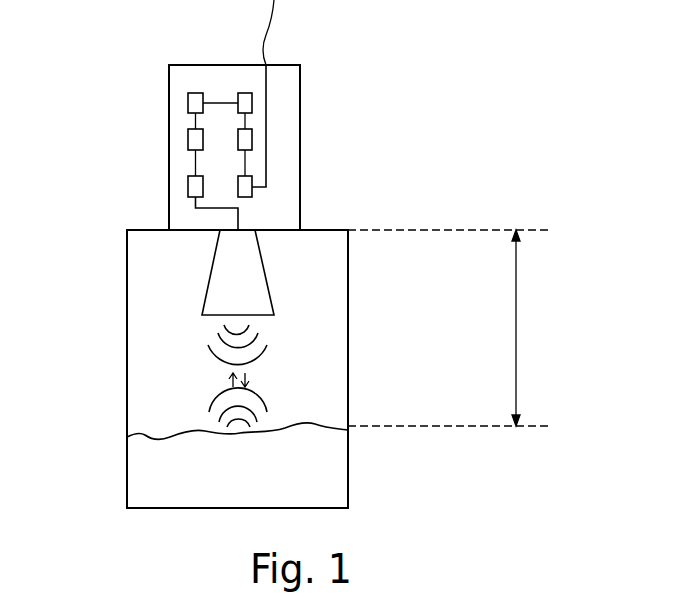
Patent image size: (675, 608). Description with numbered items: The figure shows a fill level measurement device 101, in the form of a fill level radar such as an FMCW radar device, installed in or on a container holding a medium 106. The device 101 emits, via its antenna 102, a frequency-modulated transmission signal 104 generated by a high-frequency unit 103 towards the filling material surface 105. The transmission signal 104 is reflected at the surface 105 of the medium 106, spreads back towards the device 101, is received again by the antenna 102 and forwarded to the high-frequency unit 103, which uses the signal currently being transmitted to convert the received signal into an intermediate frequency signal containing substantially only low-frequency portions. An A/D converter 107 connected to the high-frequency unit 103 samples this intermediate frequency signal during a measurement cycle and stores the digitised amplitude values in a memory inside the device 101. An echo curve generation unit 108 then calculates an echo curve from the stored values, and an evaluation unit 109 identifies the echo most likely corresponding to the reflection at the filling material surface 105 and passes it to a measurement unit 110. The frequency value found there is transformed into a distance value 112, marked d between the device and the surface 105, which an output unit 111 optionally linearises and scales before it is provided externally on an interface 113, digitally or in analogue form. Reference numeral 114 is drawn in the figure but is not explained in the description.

The fill level measurement device 101 is at (266, 172).
The antenna 102 is at (246, 273).
The high-frequency unit 103 is at (193, 185).
The transmission signal 104 is at (260, 362).
The filling material surface 105 is at (325, 430).
The medium 106 is at (142, 476).
The A/D converter 107 is at (193, 138).
The echo curve generation unit 108 is at (193, 101).
The evaluation unit 109 is at (241, 93).
The measurement unit 110 is at (248, 136).
The output unit 111 is at (247, 190).
The distance value 112 is at (516, 335).
The interface 113 is at (268, 28).
The reflected ultrasonic signal 114 is at (229, 386).